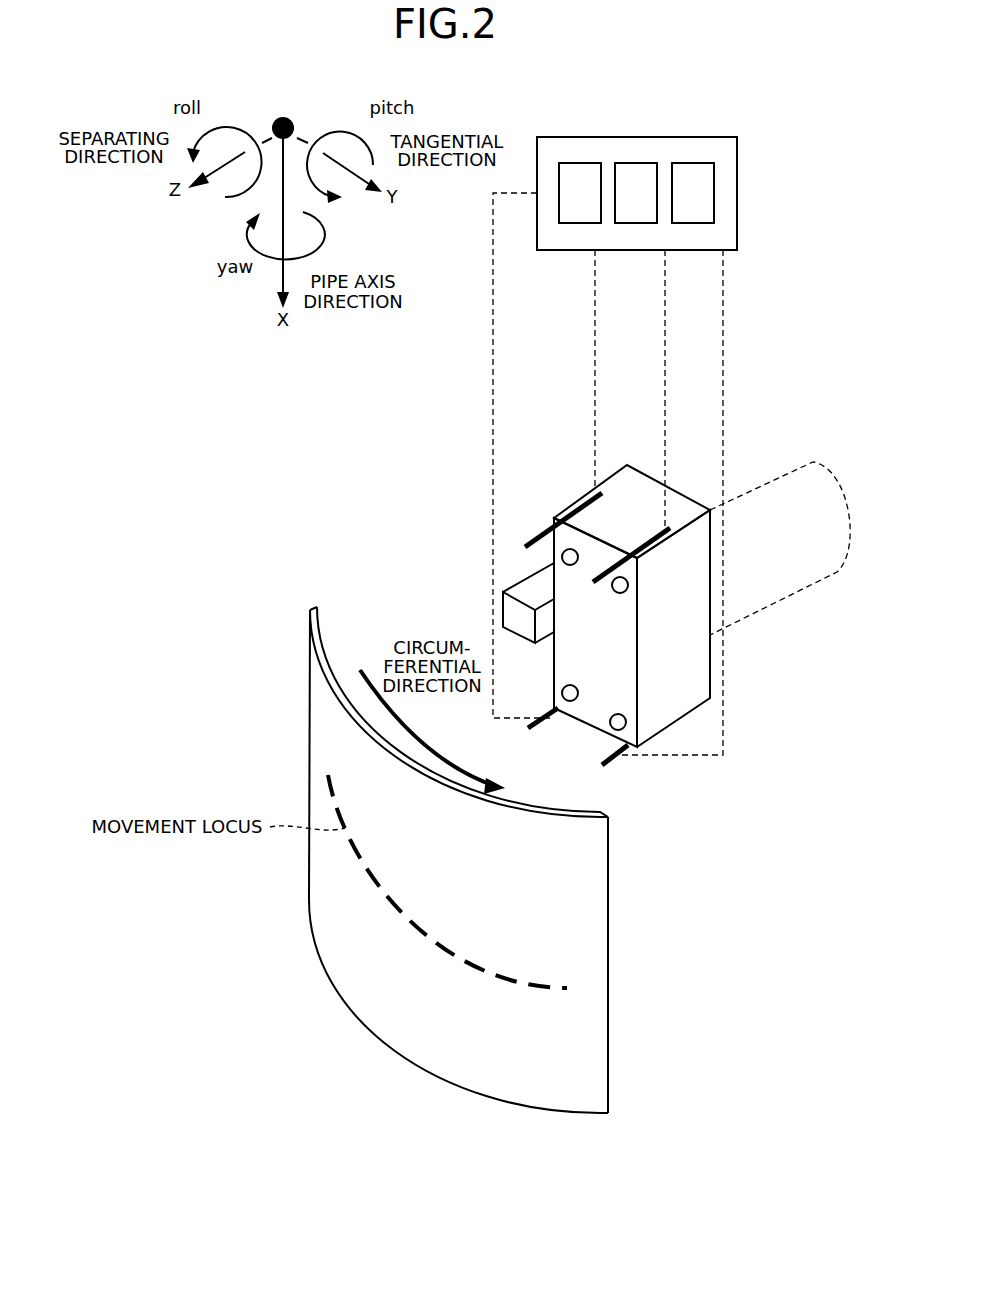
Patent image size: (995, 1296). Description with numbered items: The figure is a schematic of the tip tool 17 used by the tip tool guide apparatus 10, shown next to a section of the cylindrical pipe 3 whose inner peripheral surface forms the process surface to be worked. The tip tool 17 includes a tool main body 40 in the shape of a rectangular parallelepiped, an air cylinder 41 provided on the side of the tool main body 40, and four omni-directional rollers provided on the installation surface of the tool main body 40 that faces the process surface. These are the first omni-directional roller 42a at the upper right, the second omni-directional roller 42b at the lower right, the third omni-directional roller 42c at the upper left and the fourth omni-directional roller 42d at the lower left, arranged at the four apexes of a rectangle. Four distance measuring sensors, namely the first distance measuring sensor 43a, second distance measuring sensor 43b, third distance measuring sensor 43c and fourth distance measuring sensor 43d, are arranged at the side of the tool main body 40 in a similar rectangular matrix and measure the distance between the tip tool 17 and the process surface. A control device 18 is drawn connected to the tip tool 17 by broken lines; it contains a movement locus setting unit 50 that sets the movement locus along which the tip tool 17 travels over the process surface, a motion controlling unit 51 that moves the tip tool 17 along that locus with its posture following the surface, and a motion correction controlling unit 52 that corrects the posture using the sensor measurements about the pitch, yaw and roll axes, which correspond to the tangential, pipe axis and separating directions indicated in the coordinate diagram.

The control device 18 is at (678, 137).
The movement locus setting unit 50 is at (575, 223).
The motion controlling unit 51 is at (636, 223).
The motion correction controlling unit 52 is at (693, 223).
The tool main body 40 is at (700, 660).
The tip tool 17 is at (722, 677).
The air cylinder 41 is at (512, 615).
The first omni-directional roller 42a is at (620, 593).
The second omni-directional roller 42b is at (614, 714).
The third omni-directional roller 42c is at (572, 565).
The fourth omni-directional roller 42d is at (573, 685).
The first distance measuring sensor 43a is at (652, 547).
The second distance measuring sensor 43b is at (605, 767).
The third distance measuring sensor 43c is at (527, 533).
The fourth distance measuring sensor 43d is at (543, 730).
The tip tool guide apparatus 10 is at (336, 632).
The cylindrical pipe 3 is at (597, 1045).